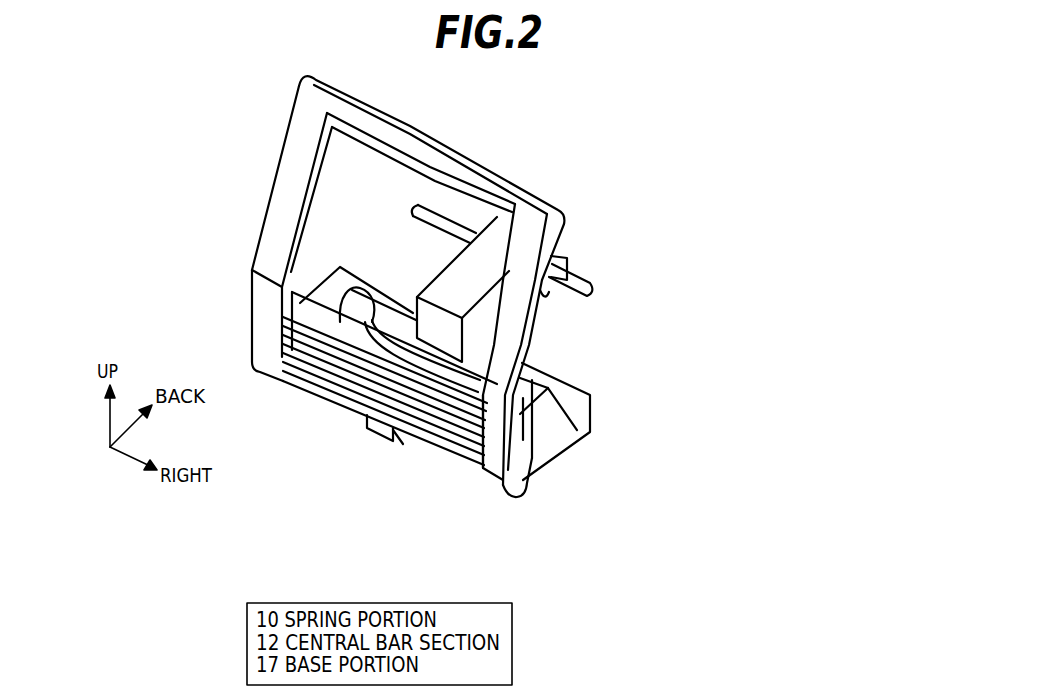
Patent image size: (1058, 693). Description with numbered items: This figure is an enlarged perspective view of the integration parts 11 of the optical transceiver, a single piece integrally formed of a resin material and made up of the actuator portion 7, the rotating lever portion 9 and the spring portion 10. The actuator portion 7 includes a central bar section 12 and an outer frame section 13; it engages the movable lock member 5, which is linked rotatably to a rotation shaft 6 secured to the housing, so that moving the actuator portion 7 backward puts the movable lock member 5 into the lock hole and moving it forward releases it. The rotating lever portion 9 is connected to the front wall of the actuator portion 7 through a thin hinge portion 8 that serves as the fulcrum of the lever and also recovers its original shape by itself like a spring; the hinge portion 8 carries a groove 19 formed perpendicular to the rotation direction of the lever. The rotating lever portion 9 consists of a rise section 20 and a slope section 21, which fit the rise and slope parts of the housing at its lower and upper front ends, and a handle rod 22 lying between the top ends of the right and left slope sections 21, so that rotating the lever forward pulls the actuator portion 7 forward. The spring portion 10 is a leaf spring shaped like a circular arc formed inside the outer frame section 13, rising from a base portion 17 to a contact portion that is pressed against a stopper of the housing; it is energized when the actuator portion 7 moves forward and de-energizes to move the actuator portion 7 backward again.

The integration parts 11 is at (244, 71).
The handle rod 22 is at (415, 134).
The slope section 21 is at (278, 182).
The rise section 20 is at (254, 310).
The outer frame section 13 is at (588, 410).
The actuator portion 7 is at (570, 445).
The groove 19 is at (522, 447).
The hinge portion 8 is at (520, 488).
The rotating lever portion 9 is at (490, 484).
The base portion 17 is at (382, 325).
The spring portion 10 is at (340, 268).
The central bar section 12 is at (452, 280).
The movable lock member 5 is at (557, 268).
The rotation shaft 6 is at (582, 282).